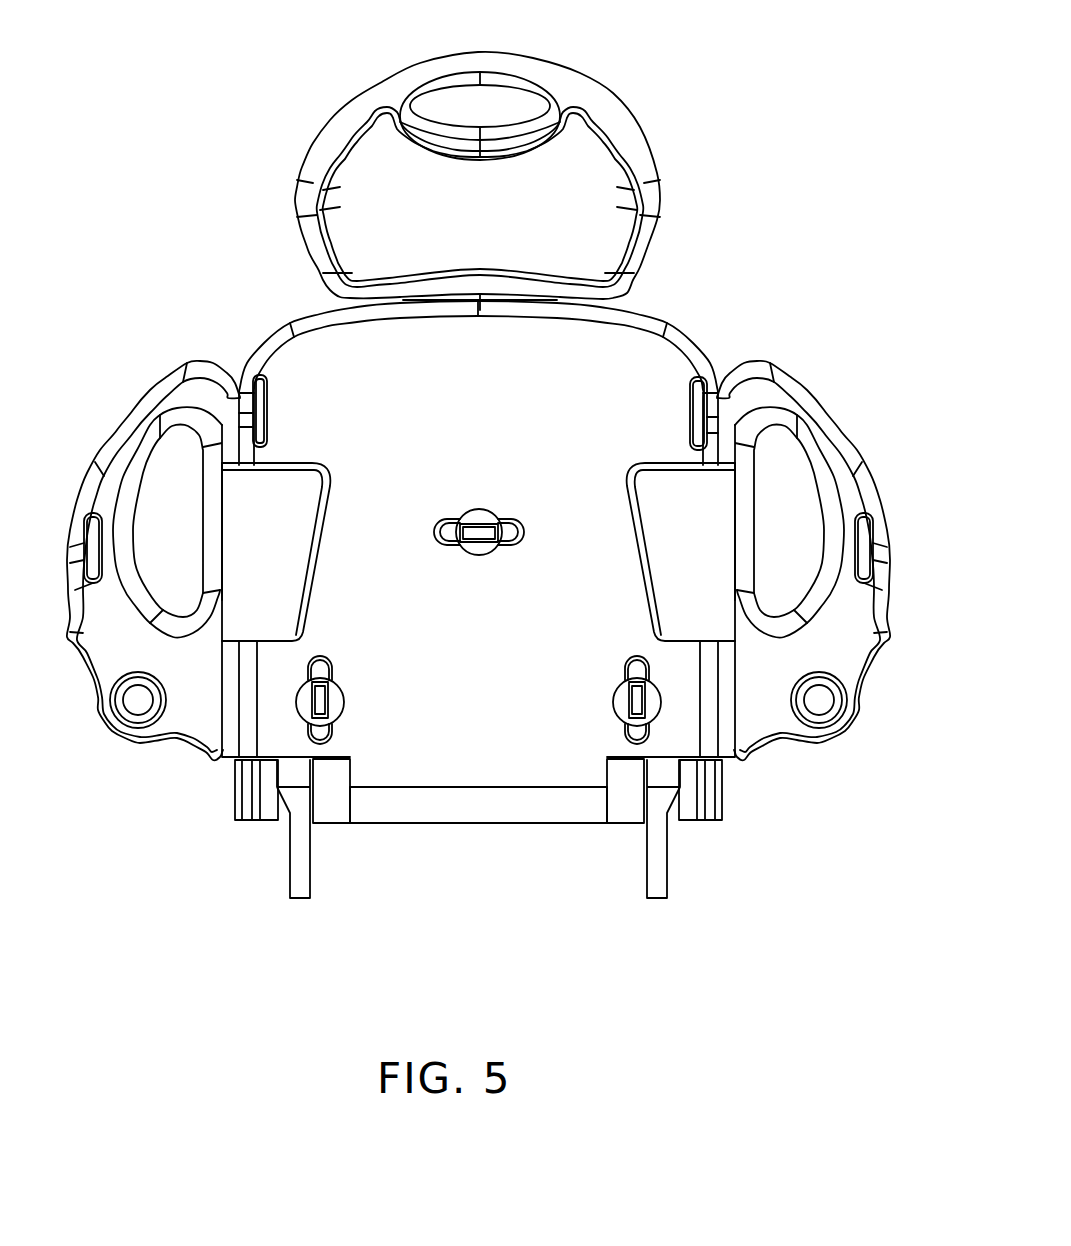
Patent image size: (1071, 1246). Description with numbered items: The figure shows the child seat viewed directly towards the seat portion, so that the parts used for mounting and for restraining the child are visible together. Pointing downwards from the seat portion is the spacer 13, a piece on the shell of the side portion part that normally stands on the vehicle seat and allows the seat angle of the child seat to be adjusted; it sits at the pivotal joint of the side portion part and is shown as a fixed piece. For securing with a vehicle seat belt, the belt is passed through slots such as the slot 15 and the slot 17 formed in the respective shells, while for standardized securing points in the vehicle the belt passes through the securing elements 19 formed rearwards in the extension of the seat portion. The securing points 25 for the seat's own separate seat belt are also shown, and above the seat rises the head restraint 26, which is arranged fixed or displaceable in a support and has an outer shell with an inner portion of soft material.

The spacer 13 is at (283, 513).
The slot 15 is at (687, 395).
The slot 17 is at (883, 520).
The securing element 19 is at (657, 845).
The securing point 25 is at (475, 557).
The head restraint 26 is at (562, 172).